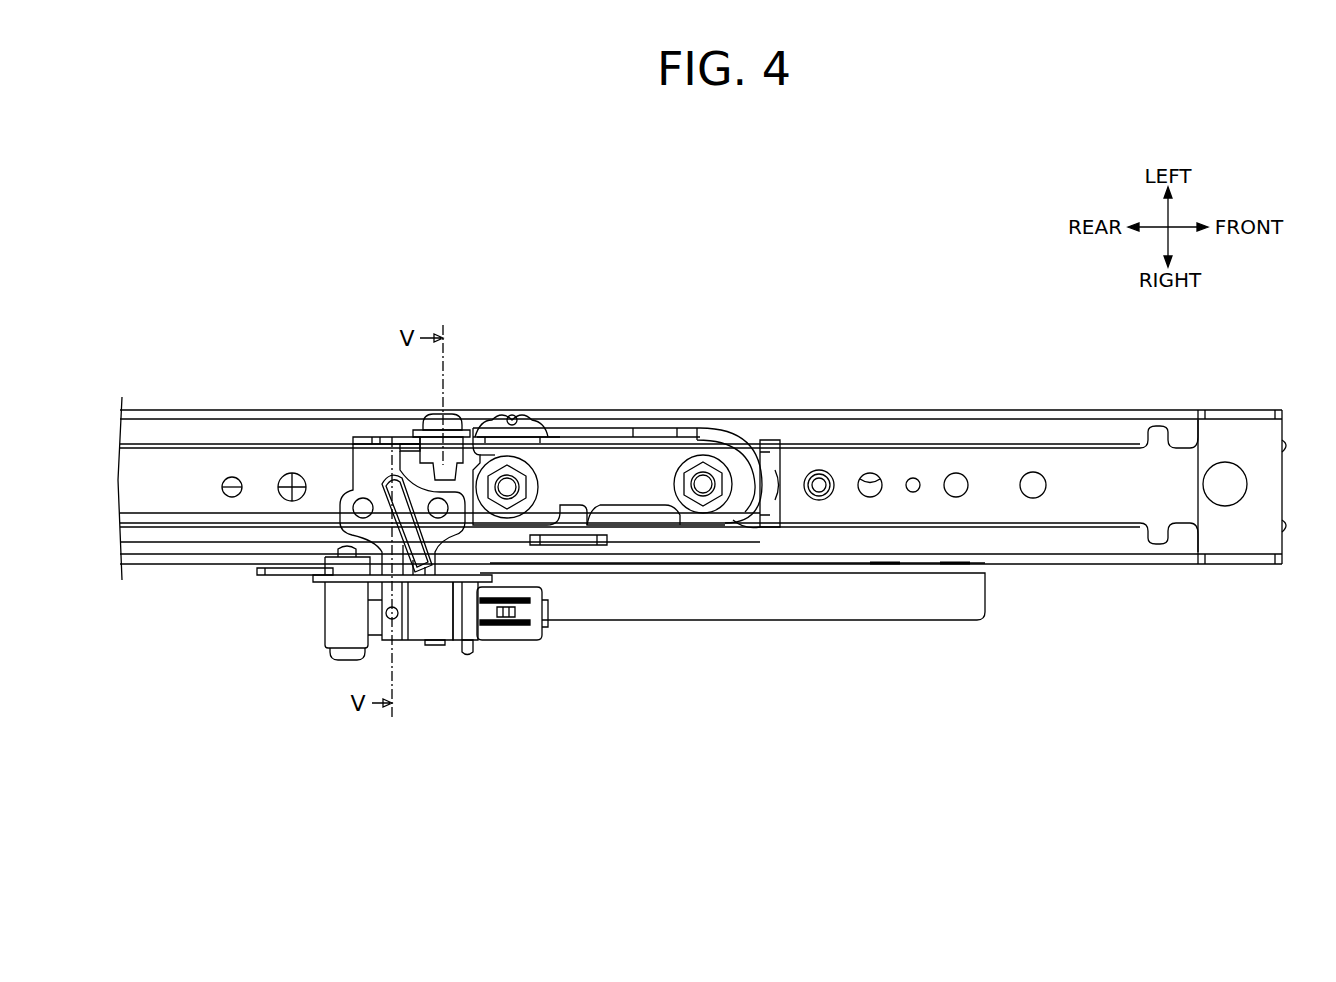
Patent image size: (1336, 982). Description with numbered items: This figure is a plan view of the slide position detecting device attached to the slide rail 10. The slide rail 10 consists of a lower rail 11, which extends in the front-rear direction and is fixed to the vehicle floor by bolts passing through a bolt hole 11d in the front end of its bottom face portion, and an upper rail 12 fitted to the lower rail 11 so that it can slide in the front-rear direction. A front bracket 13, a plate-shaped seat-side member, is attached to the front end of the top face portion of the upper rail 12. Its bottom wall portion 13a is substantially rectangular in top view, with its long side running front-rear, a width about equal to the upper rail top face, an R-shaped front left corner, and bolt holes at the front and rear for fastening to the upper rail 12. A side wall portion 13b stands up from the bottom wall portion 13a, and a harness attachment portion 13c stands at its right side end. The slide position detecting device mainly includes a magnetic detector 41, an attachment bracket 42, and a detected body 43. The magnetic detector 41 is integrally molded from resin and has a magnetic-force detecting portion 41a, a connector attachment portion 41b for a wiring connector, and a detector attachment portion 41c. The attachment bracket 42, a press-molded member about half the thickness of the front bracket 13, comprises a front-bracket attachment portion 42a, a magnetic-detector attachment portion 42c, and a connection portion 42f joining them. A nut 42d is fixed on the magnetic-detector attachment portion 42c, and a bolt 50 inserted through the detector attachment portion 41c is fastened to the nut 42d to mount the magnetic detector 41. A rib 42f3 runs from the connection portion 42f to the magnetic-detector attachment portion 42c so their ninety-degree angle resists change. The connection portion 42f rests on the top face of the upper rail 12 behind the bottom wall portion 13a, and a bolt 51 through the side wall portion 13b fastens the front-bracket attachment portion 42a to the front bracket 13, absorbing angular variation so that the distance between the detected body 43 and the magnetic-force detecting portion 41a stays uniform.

The slide rail 10 is at (263, 333).
The lower rail 11 is at (242, 420).
The bolt hole 11d is at (1232, 488).
The upper rail 12 is at (185, 470).
The front bracket 13 is at (717, 428).
The bottom wall portion 13a is at (635, 485).
The side wall portion 13b is at (655, 428).
The harness attachment portion 13c is at (567, 547).
The magnetic detector 41 is at (323, 607).
The magnetic-force detecting portion 41a is at (416, 643).
The connector attachment portion 41b is at (520, 640).
The detector attachment portion 41c is at (333, 628).
The attachment bracket 42 is at (350, 473).
The front-bracket attachment portion 42a is at (383, 437).
The magnetic-detector attachment portion 42c is at (474, 654).
The nut 42d is at (328, 573).
The connection portion 42f is at (352, 496).
The rib 42f3 is at (410, 440).
The detected body 43 is at (833, 605).
The bolt 50 is at (345, 660).
The bolt 51 is at (450, 418).